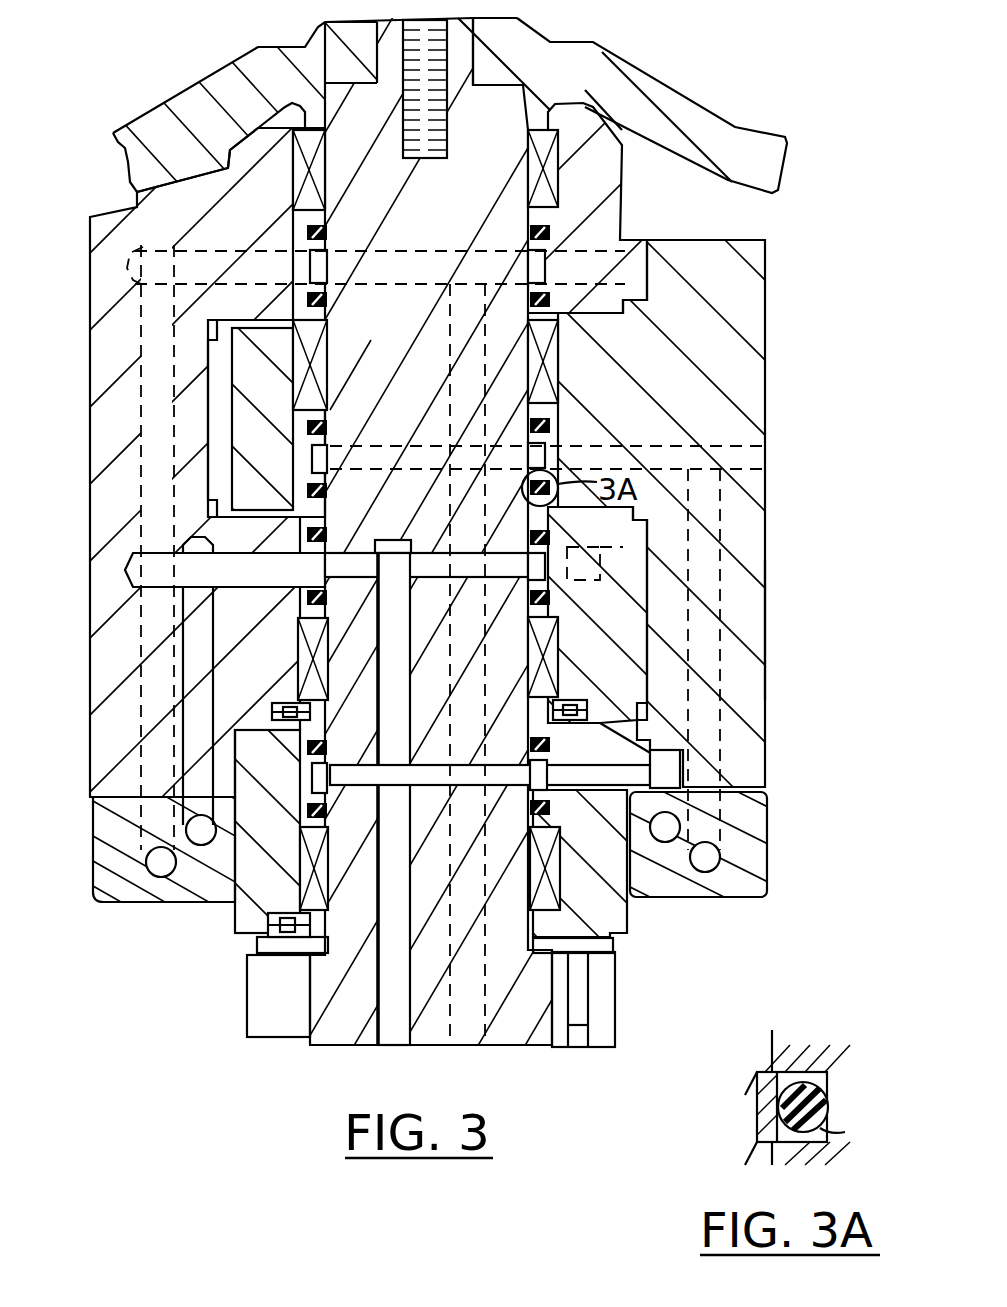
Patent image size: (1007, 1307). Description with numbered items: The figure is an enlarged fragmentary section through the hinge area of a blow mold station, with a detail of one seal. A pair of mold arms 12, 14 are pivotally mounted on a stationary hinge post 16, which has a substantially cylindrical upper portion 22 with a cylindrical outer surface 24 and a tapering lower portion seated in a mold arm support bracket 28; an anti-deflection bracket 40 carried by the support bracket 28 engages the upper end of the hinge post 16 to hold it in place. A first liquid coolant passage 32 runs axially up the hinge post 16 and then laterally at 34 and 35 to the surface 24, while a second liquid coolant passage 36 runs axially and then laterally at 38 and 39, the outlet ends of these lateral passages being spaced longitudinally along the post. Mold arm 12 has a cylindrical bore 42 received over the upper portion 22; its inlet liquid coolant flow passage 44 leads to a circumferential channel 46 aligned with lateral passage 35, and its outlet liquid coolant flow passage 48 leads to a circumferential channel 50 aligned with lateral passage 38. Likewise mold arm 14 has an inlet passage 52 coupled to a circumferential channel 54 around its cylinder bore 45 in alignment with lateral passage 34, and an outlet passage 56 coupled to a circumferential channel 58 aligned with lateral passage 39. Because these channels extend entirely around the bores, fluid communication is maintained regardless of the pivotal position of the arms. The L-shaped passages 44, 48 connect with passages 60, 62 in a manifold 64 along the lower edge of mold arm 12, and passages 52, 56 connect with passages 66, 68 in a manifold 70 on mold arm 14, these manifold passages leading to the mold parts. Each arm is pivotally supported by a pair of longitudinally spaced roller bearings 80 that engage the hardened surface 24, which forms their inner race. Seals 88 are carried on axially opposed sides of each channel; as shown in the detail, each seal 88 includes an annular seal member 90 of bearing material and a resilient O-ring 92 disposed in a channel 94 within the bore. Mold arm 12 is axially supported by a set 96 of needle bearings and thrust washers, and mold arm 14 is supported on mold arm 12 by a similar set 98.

In FIG. 3, the mold arm 12 is at (770, 261).
In FIG. 3, the mold arm 14 is at (95, 497).
In FIG. 3, the hinge post 16 is at (300, 1007).
In FIG. 3, the upper portion 22 is at (545, 45).
In FIG. 3, the cylindrical outer surface 24 is at (546, 410).
In FIG. 3A, the cylindrical outer surface 24 is at (760, 1050).
In FIG. 3, the mold arm support bracket 28 is at (614, 968).
In FIG. 3, the first liquid coolant passage 32 is at (393, 1025).
In FIG. 3, the lateral passage 34 is at (362, 530).
In FIG. 3, the lateral passage 35 is at (340, 764).
In FIG. 3, the second liquid coolant passage 36 is at (467, 1047).
In FIG. 3, the lateral passage 38 is at (373, 452).
In FIG. 3, the lateral passage 39 is at (400, 247).
In FIG. 3, the anti-deflection bracket 40 is at (676, 103).
In FIG. 3, the cylindrical bore 42 is at (530, 820).
In FIG. 3A, the cylindrical bore 42 is at (775, 1152).
In FIG. 3, the inlet liquid coolant flow passage 44 is at (680, 773).
In FIG. 3, the cylinder bore 45 is at (322, 466).
In FIG. 3, the circumferential channel 46 is at (548, 766).
In FIG. 3, the outlet liquid coolant flow passage 48 is at (765, 568).
In FIG. 3, the circumferential channel 50 is at (548, 456).
In FIG. 3, the inlet liquid coolant flow passage 52 is at (190, 683).
In FIG. 3, the circumferential channel 54 is at (320, 567).
In FIG. 3, the outlet passage 56 is at (140, 503).
In FIG. 3, the circumferential channel 58 is at (308, 262).
In FIG. 3, the passage 60 is at (668, 842).
In FIG. 3, the passage 62 is at (716, 857).
In FIG. 3, the manifold 64 is at (770, 814).
In FIG. 3, the passage 66 is at (200, 845).
In FIG. 3, the passage 68 is at (150, 870).
In FIG. 3, the manifold 70 is at (110, 824).
In FIG. 3, the roller bearings 80 is at (298, 176).
In FIG. 3, the seals 88 is at (555, 232).
In FIG. 3A, the seals 88 is at (785, 1063).
In FIG. 3A, the annular seal member 90 is at (758, 1105).
In FIG. 3A, the O-ring 92 is at (822, 1068).
In FIG. 3A, the channel 94 is at (845, 1132).
In FIG. 3, the set of needle bearings and thrust washers 96 is at (242, 938).
In FIG. 3, the set of needle bearings and thrust washers 98 is at (574, 703).